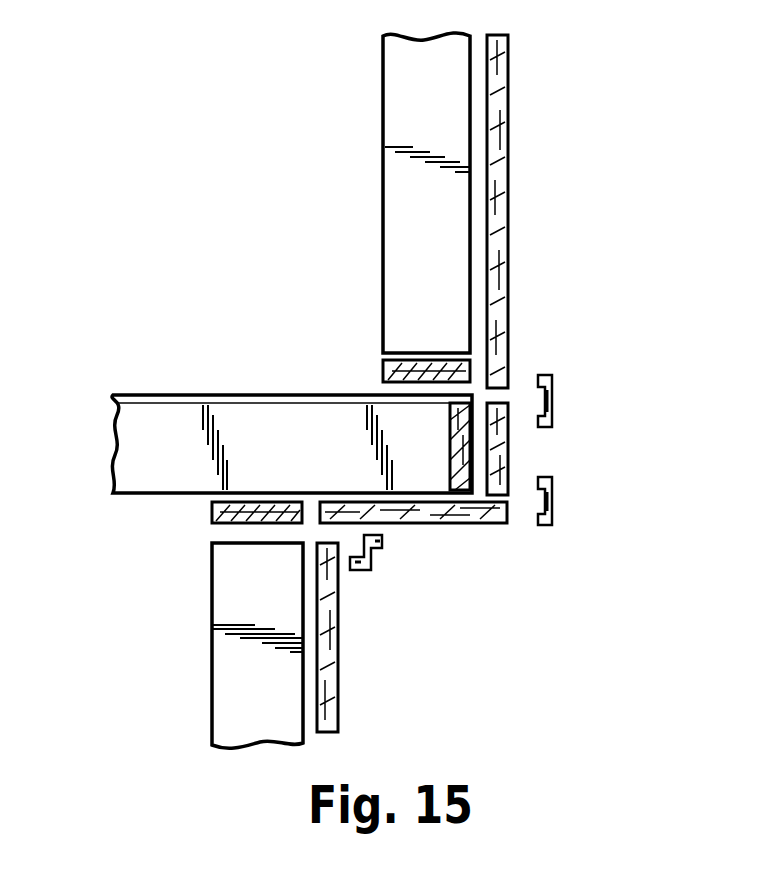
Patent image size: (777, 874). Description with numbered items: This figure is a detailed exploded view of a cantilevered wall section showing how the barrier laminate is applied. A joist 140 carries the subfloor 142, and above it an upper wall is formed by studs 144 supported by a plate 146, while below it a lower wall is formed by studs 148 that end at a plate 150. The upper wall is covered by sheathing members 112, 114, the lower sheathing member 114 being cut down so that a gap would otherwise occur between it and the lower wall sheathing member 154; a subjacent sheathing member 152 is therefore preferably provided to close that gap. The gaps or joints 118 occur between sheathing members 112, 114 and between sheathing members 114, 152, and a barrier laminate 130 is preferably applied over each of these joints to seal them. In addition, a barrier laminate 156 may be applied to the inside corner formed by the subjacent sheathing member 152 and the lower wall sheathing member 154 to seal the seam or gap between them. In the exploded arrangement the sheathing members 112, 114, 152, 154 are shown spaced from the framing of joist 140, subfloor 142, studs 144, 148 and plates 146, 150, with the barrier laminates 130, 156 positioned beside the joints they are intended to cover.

The sheathing member 112 is at (508, 173).
The cut down sheathing member 114 is at (510, 452).
The gap between edge strips 118 is at (498, 398).
The barrier laminate 130 is at (552, 394).
The joist 140 is at (112, 437).
The subfloor 142 is at (178, 395).
The studs 144 is at (400, 236).
The plate 146 is at (383, 372).
The studs 148 is at (212, 672).
The plate 150 is at (212, 512).
The subjacent sheathing member 152 is at (505, 523).
The lower wall sheathing member 154 is at (338, 616).
The barrier laminate 156 is at (366, 556).